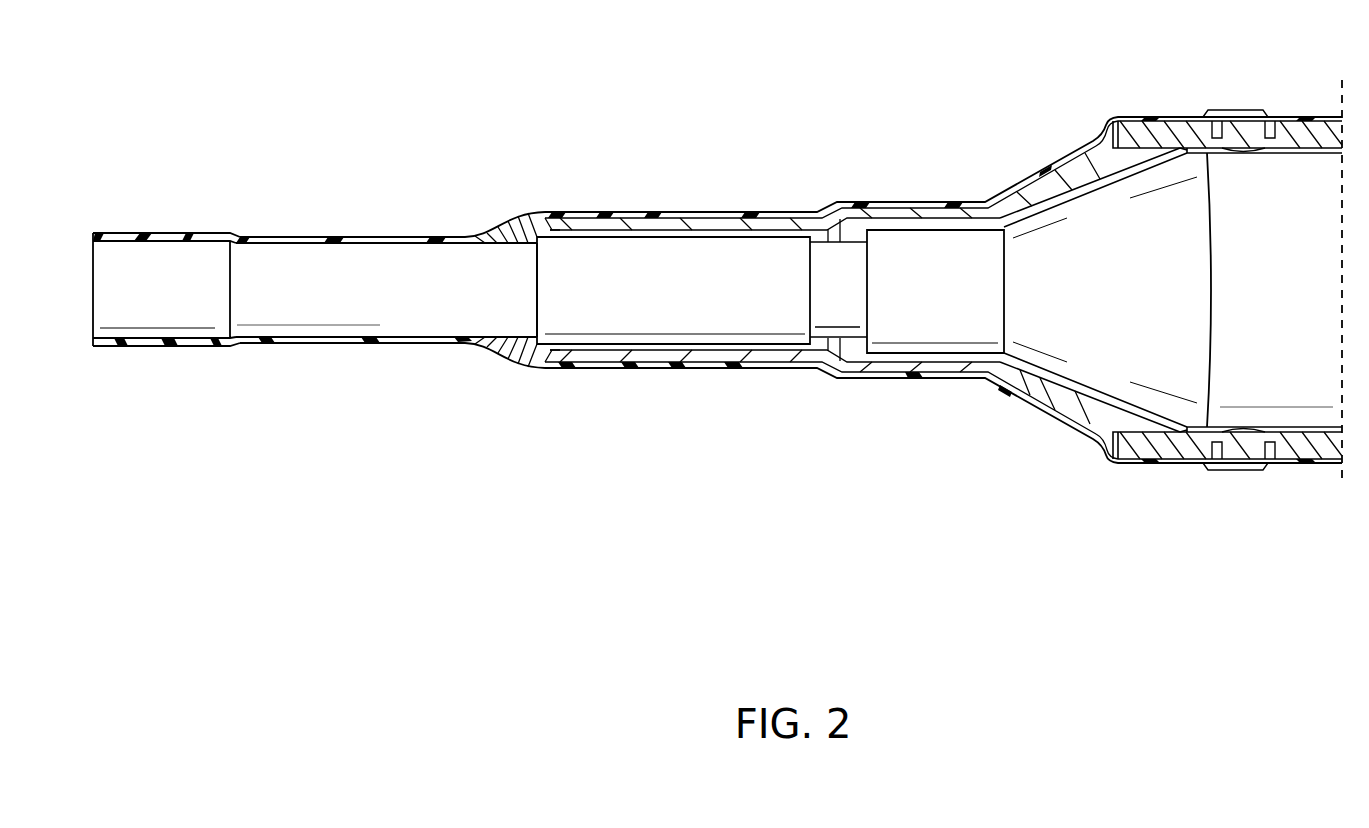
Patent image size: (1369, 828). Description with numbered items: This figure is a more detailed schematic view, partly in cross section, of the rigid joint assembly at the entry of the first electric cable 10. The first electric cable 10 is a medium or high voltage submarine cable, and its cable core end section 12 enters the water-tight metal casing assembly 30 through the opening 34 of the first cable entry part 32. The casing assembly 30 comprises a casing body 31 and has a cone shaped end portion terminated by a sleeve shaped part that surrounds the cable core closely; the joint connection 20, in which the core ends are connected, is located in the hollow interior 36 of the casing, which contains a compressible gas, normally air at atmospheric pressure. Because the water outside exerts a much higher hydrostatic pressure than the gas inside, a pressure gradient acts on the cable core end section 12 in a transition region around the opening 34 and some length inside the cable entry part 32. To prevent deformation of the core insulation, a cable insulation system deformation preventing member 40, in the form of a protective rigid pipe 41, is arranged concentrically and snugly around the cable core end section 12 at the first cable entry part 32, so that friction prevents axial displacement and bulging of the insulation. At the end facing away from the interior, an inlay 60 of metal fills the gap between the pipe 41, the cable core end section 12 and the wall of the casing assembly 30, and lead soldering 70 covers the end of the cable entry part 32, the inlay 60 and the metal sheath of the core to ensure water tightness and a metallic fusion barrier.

The first electric cable 10 is at (310, 205).
The cable core end section 12 is at (527, 290).
The joint connection 20 is at (1130, 207).
The casing assembly 30 is at (1047, 152).
The casing body 31 is at (1175, 112).
The first cable entry part 32 is at (690, 378).
The opening 34 is at (527, 317).
The hollow interior 36 is at (1135, 407).
The cable insulation system deformation preventing member 40 is at (638, 257).
The protective rigid pipe 41 is at (727, 263).
The inlay 60 is at (533, 225).
The lead soldering 70 is at (517, 350).